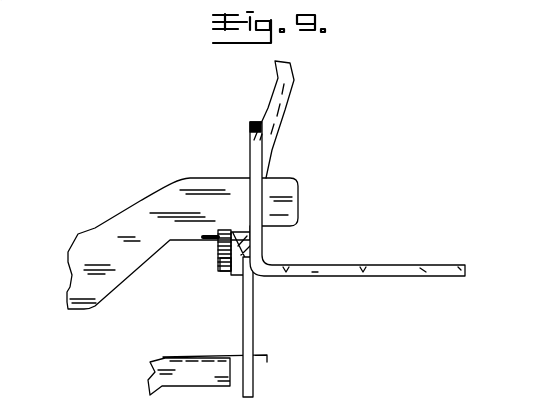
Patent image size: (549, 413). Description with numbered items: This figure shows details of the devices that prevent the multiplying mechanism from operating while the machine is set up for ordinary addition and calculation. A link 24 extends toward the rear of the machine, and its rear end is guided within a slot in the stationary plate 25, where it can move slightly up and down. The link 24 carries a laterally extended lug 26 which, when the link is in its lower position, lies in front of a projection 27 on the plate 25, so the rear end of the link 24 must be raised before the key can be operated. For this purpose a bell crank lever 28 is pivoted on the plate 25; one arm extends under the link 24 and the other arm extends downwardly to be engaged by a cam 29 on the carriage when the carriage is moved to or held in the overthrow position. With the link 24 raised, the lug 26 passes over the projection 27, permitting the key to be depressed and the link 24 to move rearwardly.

The link 24 is at (148, 213).
The stationary plate 25 is at (293, 78).
The laterally extended lug 26 is at (223, 238).
The projection 27 is at (238, 270).
The bell crank lever 28 is at (225, 263).
The cam 29 is at (267, 357).